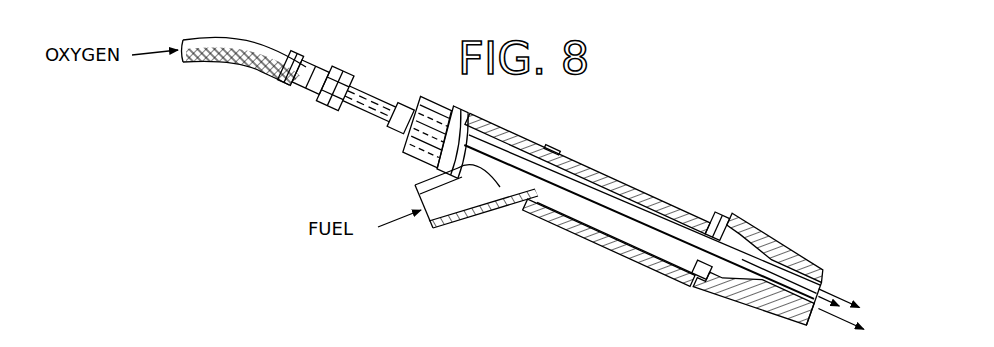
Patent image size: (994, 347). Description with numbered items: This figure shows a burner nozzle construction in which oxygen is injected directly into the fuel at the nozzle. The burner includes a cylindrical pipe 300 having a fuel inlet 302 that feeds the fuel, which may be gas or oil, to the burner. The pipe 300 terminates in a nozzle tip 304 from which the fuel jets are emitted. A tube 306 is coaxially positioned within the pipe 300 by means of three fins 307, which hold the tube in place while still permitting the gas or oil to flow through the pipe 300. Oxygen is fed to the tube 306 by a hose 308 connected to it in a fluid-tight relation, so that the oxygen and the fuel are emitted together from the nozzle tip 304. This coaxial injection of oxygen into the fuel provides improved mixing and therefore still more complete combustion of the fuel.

The cylindrical pipe 300 is at (625, 183).
The fuel inlet 302 is at (444, 231).
The nozzle tip 304 is at (792, 255).
The tube 306 is at (609, 236).
The fins 307 is at (735, 218).
The hose 308 is at (236, 41).